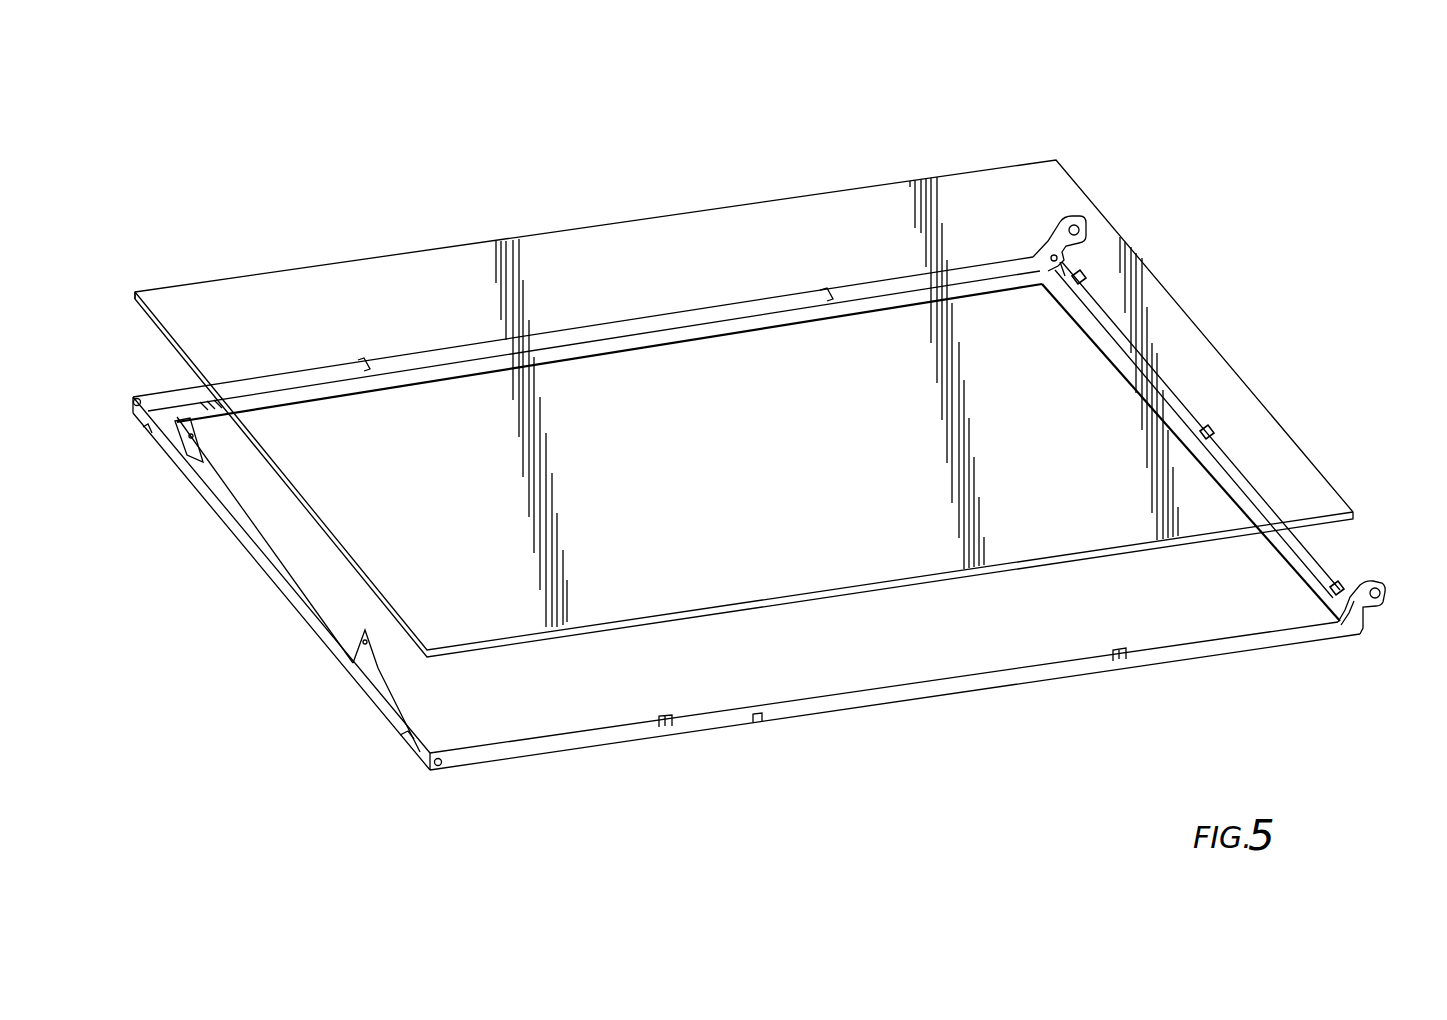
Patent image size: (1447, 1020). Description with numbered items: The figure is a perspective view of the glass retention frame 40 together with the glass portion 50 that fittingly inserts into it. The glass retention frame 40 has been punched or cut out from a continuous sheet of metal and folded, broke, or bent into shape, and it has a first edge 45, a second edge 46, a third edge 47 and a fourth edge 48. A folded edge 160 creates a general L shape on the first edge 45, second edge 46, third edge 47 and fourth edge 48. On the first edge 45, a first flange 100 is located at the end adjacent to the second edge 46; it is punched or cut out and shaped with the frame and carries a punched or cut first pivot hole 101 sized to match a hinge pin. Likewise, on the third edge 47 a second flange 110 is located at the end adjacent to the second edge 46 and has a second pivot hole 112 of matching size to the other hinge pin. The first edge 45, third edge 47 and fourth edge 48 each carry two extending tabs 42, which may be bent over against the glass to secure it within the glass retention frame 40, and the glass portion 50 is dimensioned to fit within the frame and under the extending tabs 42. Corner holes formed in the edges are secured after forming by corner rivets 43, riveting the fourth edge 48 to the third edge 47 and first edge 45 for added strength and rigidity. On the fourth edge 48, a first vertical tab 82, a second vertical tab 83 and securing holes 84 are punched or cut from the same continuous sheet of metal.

The glass retention frame 40 is at (758, 483).
The extending tabs 42 is at (1348, 588).
The corner rivets 43 is at (137, 392).
The first edge 45 is at (876, 703).
The second edge 46 is at (1212, 414).
The third edge 47 is at (676, 305).
The fourth edge 48 is at (218, 530).
The glass portion 50 is at (859, 214).
The first vertical tab 82 is at (186, 452).
The second vertical tab 83 is at (364, 667).
The securing holes 84 is at (200, 436).
The first flange 100 is at (1392, 632).
The first pivot hole 101 is at (1386, 594).
The second flange 110 is at (1087, 190).
The second pivot hole 112 is at (1079, 214).
The folded edge 160 is at (146, 431).